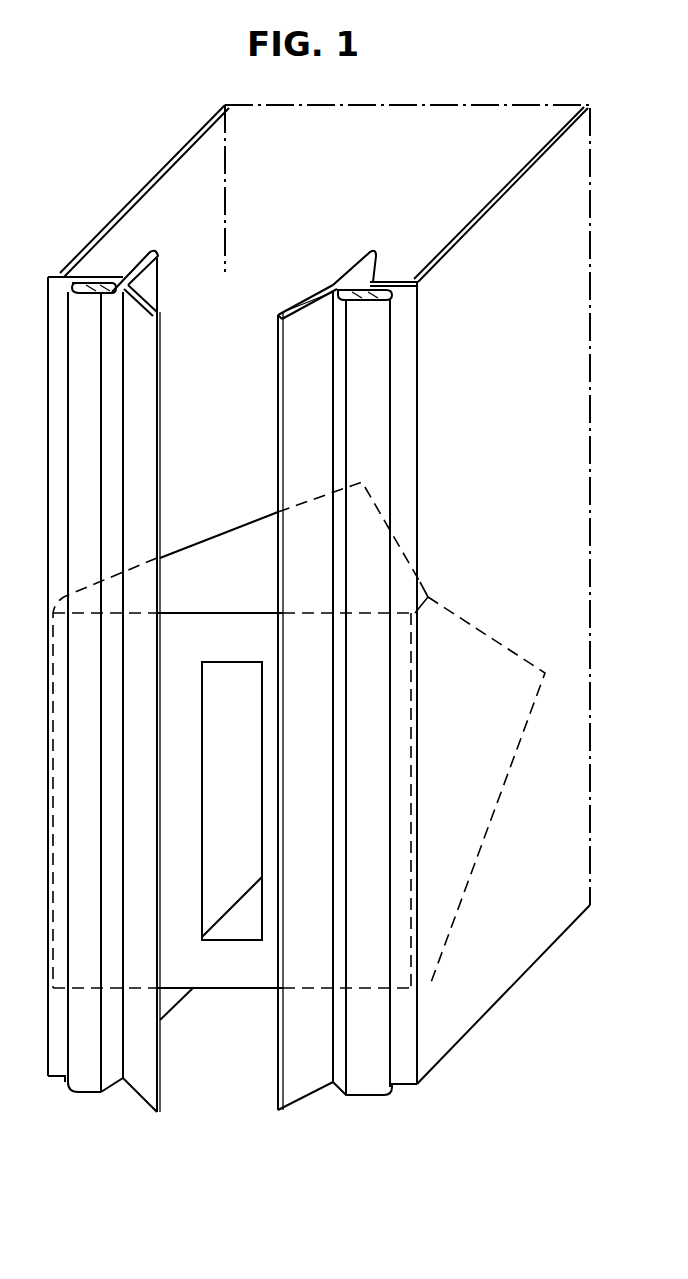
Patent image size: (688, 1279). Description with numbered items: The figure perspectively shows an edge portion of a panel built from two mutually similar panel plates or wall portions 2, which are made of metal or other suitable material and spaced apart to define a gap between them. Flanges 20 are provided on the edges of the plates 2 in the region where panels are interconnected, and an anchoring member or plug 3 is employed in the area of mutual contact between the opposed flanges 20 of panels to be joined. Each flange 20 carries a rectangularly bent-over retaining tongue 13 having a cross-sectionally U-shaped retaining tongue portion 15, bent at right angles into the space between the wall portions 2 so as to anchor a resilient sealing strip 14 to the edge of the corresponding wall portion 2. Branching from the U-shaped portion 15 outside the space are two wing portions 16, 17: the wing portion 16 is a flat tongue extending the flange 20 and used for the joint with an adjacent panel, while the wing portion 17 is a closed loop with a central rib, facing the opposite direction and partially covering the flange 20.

The panel plate 2 is at (156, 170).
The anchoring plug 3 is at (180, 773).
The retaining tongue 13 is at (135, 268).
The sealing strip 14 is at (123, 453).
The U-shaped retaining tongue portion 15 is at (373, 256).
The wing portion 16 is at (316, 395).
The wing portion 17 is at (380, 458).
The flange 20 is at (70, 272).